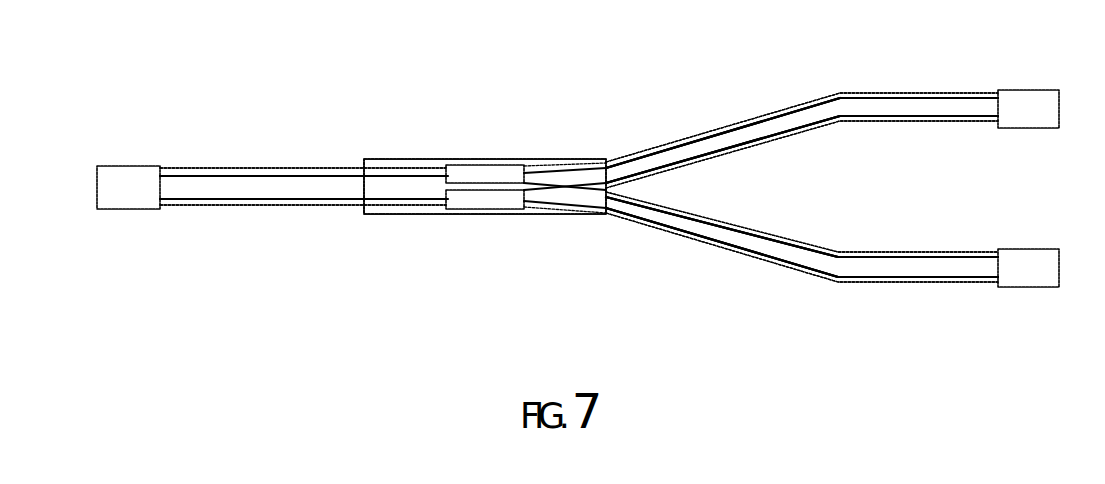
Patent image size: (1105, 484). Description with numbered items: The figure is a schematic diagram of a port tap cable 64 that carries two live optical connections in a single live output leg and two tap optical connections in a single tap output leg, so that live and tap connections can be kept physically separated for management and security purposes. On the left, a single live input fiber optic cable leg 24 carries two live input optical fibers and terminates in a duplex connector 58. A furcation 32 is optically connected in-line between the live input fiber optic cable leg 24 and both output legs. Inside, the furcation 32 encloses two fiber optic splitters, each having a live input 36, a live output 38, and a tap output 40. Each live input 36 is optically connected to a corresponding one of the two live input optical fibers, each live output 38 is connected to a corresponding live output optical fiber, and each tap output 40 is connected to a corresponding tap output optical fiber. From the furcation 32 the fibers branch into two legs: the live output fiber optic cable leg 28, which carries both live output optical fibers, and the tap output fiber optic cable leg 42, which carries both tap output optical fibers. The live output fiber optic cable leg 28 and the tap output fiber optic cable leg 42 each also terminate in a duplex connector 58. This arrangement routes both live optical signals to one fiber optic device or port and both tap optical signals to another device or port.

The live input fiber optic cable leg 24 is at (232, 170).
The live output fiber optic cable leg 28 is at (853, 92).
The furcation 32 is at (378, 159).
The live input 36 is at (444, 173).
The live output 38 is at (537, 168).
The tap output 40 is at (526, 180).
The tap output fiber optic cable leg 42 is at (831, 249).
The duplex connector 58 is at (97, 175).
The port tap cable 64 is at (517, 74).